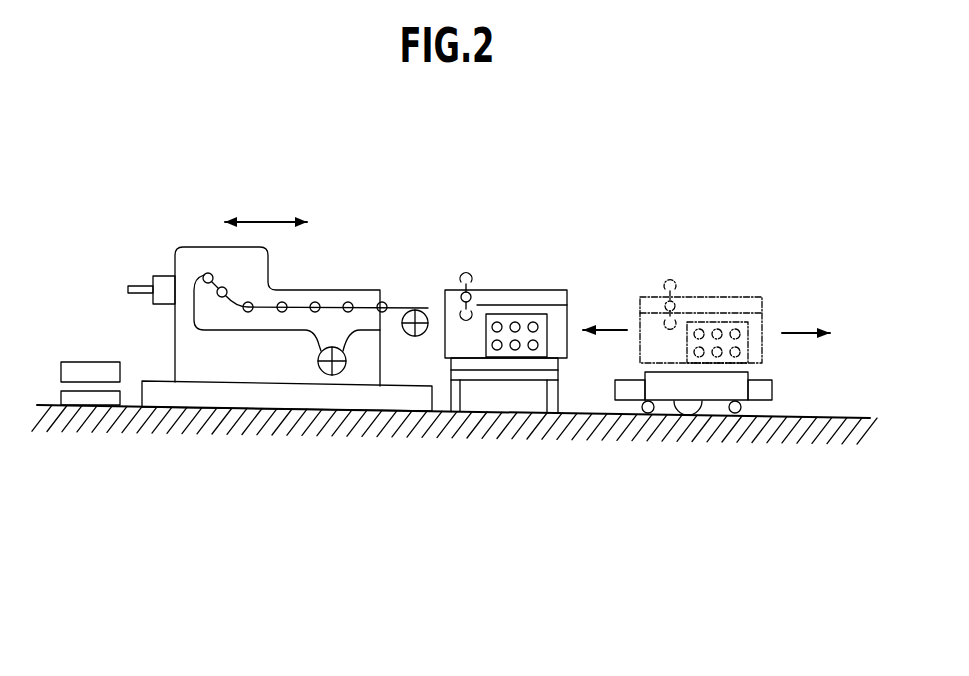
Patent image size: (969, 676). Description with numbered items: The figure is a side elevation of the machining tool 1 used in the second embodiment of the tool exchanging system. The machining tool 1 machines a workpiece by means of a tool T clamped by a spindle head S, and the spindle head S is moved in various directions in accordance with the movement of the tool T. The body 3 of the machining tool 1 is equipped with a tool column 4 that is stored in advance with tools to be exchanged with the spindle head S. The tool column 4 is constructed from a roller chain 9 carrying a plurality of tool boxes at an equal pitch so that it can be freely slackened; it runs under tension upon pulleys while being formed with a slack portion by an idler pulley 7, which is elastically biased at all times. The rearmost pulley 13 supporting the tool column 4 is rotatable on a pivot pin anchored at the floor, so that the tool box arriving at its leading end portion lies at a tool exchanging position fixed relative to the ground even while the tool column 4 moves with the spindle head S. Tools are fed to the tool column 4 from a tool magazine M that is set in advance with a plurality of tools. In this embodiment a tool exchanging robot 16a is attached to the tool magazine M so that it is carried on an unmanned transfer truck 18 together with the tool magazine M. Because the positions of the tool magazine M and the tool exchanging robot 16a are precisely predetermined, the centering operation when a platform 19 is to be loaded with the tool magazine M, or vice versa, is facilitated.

The machining tool 1 is at (208, 232).
The spindle head S is at (166, 278).
The tool T is at (137, 287).
The body 3 is at (247, 287).
The roller chain 9 is at (298, 306).
The tool column 4 is at (333, 300).
The rearmost pulley 13 is at (418, 309).
The idler pulley 7 is at (334, 375).
The tool magazine M is at (522, 300).
The tool exchanging robot 16a is at (465, 271).
The platform 19 is at (497, 379).
The unmanned transfer truck 18 is at (707, 383).